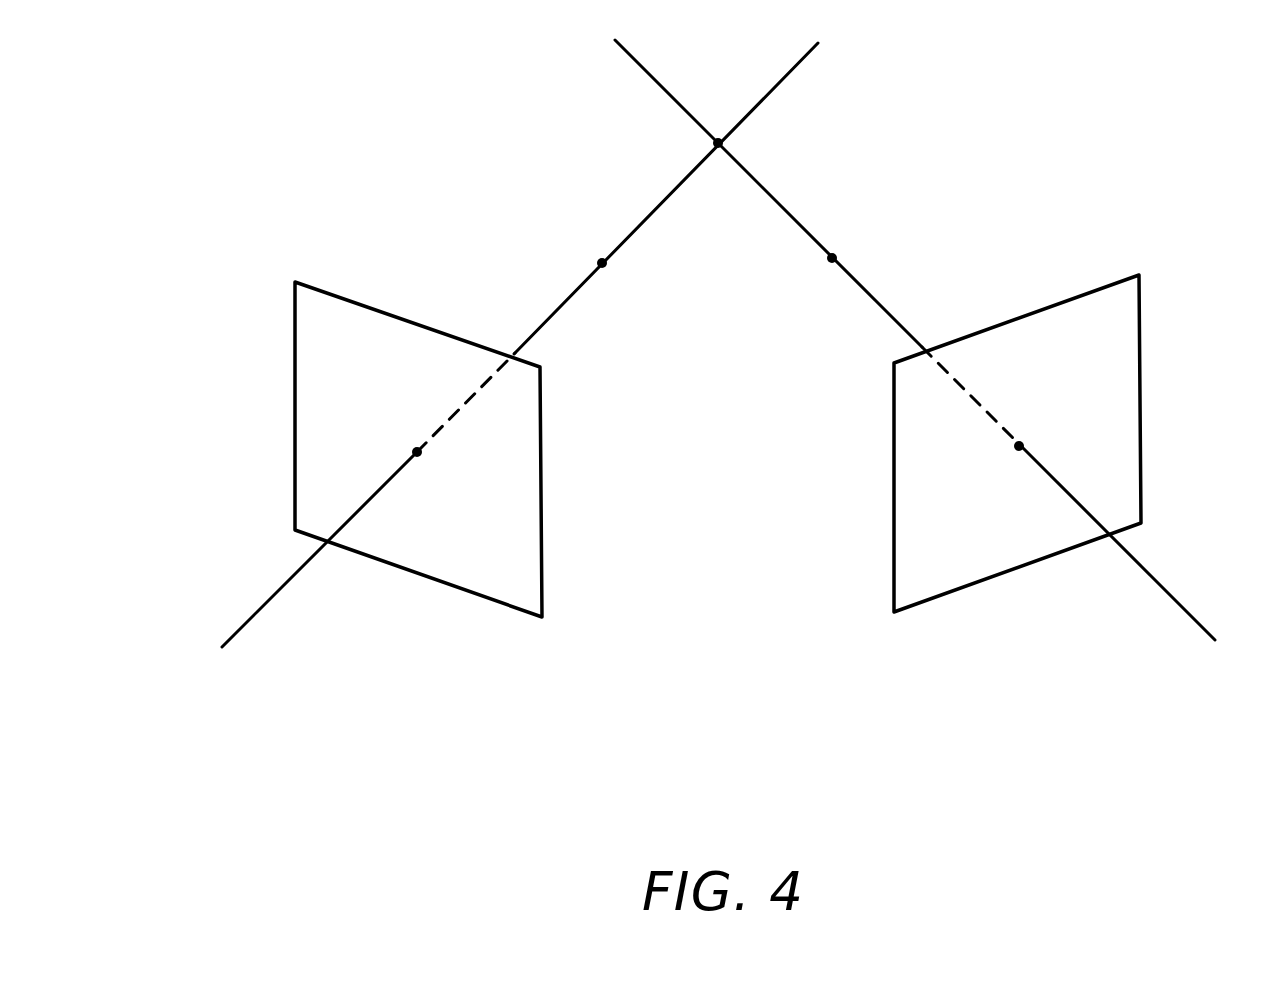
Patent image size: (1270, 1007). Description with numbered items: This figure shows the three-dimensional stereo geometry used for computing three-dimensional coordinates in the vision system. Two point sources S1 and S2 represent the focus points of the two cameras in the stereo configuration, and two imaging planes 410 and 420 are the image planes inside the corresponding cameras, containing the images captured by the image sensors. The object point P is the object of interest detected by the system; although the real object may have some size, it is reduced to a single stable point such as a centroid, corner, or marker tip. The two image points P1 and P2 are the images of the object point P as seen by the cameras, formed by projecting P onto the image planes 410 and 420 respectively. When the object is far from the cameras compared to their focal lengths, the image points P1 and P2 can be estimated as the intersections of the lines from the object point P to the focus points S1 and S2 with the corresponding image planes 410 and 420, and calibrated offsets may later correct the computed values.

The imaging plane 410 is at (305, 412).
The imaging plane 420 is at (1130, 404).
The object point P is at (794, 149).
The point source S1 is at (621, 278).
The point source S2 is at (819, 276).
The image point P1 is at (437, 465).
The image point P2 is at (1007, 456).